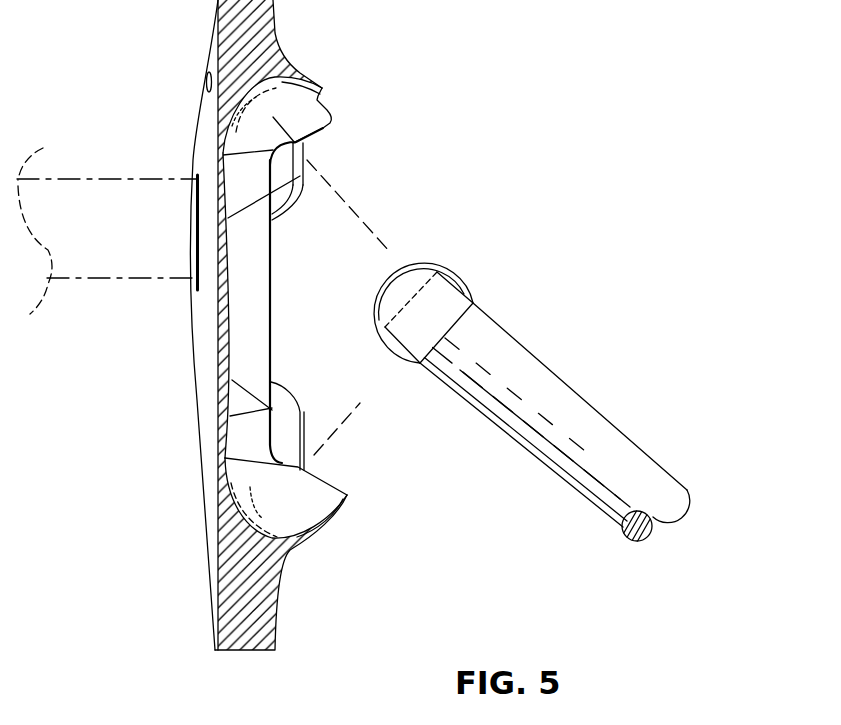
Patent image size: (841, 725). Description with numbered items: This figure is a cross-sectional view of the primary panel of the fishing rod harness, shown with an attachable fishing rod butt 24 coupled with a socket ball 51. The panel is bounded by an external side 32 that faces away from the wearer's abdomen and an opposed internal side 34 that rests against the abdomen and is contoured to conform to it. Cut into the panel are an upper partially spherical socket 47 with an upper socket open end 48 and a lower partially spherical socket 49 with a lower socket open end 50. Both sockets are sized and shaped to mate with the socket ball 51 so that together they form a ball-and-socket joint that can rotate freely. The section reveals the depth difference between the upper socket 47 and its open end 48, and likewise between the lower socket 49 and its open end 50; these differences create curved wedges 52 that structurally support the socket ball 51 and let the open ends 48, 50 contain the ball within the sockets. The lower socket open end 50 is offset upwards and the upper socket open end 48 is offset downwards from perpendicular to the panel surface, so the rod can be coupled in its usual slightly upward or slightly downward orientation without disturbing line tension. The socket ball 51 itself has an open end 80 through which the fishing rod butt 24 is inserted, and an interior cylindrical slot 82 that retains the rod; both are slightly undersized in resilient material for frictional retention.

The fishing rod butt 24 is at (450, 296).
The external side 32 is at (277, 25).
The internal side 34 is at (215, 35).
The upper partially spherical socket 47 is at (287, 110).
The upper socket open end 48 is at (249, 158).
The lower partially spherical socket 49 is at (316, 495).
The lower socket open end 50 is at (278, 498).
The socket ball 51 is at (442, 263).
The curved wedges 52 is at (230, 212).
The open end 80 is at (473, 303).
The interior cylindrical slot 82 is at (418, 374).